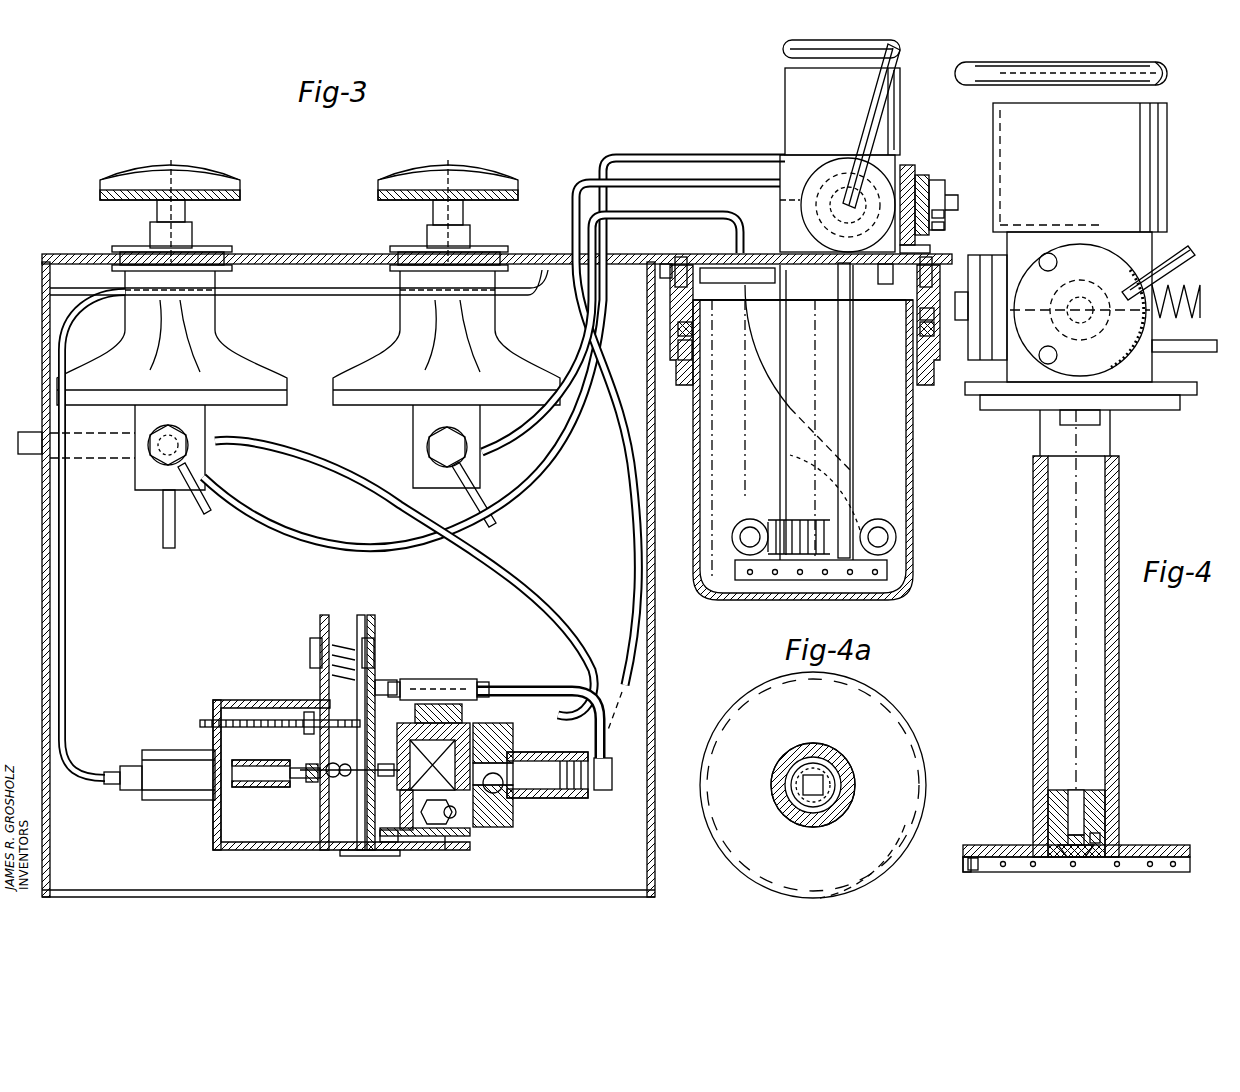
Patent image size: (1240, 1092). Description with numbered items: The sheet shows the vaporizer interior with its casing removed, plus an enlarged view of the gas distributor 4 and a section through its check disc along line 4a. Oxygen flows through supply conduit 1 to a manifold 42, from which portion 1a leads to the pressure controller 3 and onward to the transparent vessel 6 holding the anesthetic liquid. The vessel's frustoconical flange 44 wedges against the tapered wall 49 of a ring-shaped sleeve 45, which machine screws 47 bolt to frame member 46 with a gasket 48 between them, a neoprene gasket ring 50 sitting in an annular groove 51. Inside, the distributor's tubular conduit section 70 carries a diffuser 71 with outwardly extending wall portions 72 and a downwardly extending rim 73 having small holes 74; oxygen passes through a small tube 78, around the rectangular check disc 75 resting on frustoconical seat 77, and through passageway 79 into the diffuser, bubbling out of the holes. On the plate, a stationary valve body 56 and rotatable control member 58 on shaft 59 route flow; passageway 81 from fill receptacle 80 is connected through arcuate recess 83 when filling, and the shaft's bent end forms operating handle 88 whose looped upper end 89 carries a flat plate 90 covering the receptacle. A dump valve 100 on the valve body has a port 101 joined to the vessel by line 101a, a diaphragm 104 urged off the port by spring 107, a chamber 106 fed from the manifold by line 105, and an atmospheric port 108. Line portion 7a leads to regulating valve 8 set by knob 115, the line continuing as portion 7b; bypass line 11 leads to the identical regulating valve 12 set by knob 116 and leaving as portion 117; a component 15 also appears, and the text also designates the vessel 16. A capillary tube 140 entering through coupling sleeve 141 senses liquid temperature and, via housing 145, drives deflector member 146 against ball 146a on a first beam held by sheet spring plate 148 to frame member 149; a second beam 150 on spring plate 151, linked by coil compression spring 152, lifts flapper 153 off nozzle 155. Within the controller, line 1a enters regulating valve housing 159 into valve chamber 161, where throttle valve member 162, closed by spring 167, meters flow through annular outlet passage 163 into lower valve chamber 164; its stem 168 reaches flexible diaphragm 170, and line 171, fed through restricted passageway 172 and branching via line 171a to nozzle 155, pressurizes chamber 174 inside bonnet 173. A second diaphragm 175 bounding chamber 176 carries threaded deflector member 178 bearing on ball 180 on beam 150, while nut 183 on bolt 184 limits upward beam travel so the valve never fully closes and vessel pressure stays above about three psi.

In FIG. 3, the supply conduit 1 is at (28, 432).
In FIG. 3, the supply conduit portion 1a is at (284, 443).
In FIG. 3, the pressure controller 3 is at (548, 856).
In FIG. 3, the gas distributor 4 is at (856, 398).
In FIG. 4, the gas distributor 4 is at (1128, 667).
In FIG. 4, the section line 4a is at (956, 840).
In FIG. 3, the vessel 6 is at (913, 556).
In FIG. 3, the line portion 7a is at (692, 226).
In FIG. 3, the tube 7b is at (498, 527).
In FIG. 3, the regulating valve 8 is at (390, 326).
In FIG. 3, the bypass line 11 is at (420, 664).
In FIG. 3, the oxygen pressure regulating valve 12 is at (215, 310).
In FIG. 3, the pipe 15 is at (163, 535).
In FIG. 3, the vessel 16 is at (668, 186).
In FIG. 3, the manifold 42 is at (135, 470).
In FIG. 3, the frustoconically shaped flange 44 is at (920, 318).
In FIG. 3, the ring-shaped sleeve 45 is at (680, 308).
In FIG. 4, the ring-shaped sleeve 45 is at (968, 321).
In FIG. 3, the frame member 46 is at (290, 254).
In FIG. 4, the frame member 46 is at (968, 290).
In FIG. 3, the machine screws 47 is at (660, 268).
In FIG. 3, the gasket 48 is at (906, 282).
In FIG. 3, the tapered wall 49 is at (704, 290).
In FIG. 3, the gasket ring 50 is at (680, 330).
In FIG. 3, the annular groove 51 is at (684, 350).
In FIG. 3, the stationary valve body 56 is at (780, 173).
In FIG. 4, the stationary valve body 56 is at (1148, 370).
In FIG. 3, the rotatable control member 58 is at (803, 205).
In FIG. 4, the rotatable control member 58 is at (992, 360).
In FIG. 4, the shaft 59 is at (1205, 295).
In FIG. 3, the tubular conduit section 70 is at (850, 436).
In FIG. 4, the tubular conduit section 70 is at (1034, 470).
In FIG. 3, the diffuser 71 is at (882, 582).
In FIG. 4, the diffuser 71 is at (1168, 873).
In FIG. 4A, the diffuser 71 is at (862, 705).
In FIG. 4, the outwardly extending wall portions 72 is at (1015, 846).
In FIG. 4, the downwardly extending rim 73 is at (1195, 868).
In FIG. 4A, the downwardly extending rim 73 is at (895, 862).
In FIG. 4, the small holes 74 is at (1008, 872).
In FIG. 4, the check disc 75 is at (1072, 858).
In FIG. 4A, the check disc 75 is at (803, 785).
In FIG. 4, the frustoconical seat 77 is at (1095, 865).
In FIG. 4, the tube 78 is at (1105, 800).
In FIG. 4, the passageway 79 is at (1080, 870).
In FIG. 3, the fill receptacle 80 is at (790, 97).
In FIG. 4, the fill receptacle 80 is at (1180, 166).
In FIG. 4, the passageway 81 is at (1178, 246).
In FIG. 3, the arcuately shaped recess 83 is at (896, 135).
In FIG. 3, the operating handle 88 is at (901, 66).
In FIG. 3, the upper end of handle 89 is at (782, 50).
In FIG. 4, the upper end of handle 89 is at (1170, 78).
In FIG. 3, the flat plate 90 is at (862, 40).
In FIG. 4, the flat plate 90 is at (1097, 60).
In FIG. 3, the dump valve 100 is at (952, 206).
In FIG. 4, the dump valve 100 is at (1165, 340).
In FIG. 3, the valve port 101 is at (930, 228).
In FIG. 3, the line 101a is at (940, 214).
In FIG. 3, the diaphragm 104 is at (940, 190).
In FIG. 3, the line 105 is at (692, 152).
In FIG. 4, the line 105 is at (1192, 258).
In FIG. 3, the chamber 106 is at (934, 248).
In FIG. 3, the spring 107 is at (929, 180).
In FIG. 3, the small port 108 is at (908, 165).
In FIG. 3, the knob 115 is at (472, 160).
In FIG. 3, the knob 116 is at (190, 166).
In FIG. 3, the line portion 117 is at (200, 518).
In FIG. 3, the temperature sensitive element 140 is at (337, 294).
In FIG. 3, the headed coupling sleeve 141 is at (758, 296).
In FIG. 3, the housing 145 is at (176, 745).
In FIG. 3, the deflector member 146 is at (248, 787).
In FIG. 3, the ball 146a is at (312, 763).
In FIG. 3, the sheet spring mounting plate 148 is at (275, 852).
In FIG. 3, the frame member 149 is at (216, 850).
In FIG. 3, the second beam 150 is at (359, 615).
In FIG. 3, the spring mounting plate 151 is at (388, 842).
In FIG. 3, the coil compression spring 152 is at (327, 615).
In FIG. 3, the flapper 153 is at (373, 632).
In FIG. 3, the nozzle 155 is at (390, 680).
In FIG. 3, the regulating valve housing 159 is at (460, 835).
In FIG. 3, the valve chamber 161 is at (450, 737).
In FIG. 3, the throttle valve member 162 is at (448, 838).
In FIG. 3, the annular outlet passage 163 is at (502, 752).
In FIG. 3, the lower valve chamber 164 is at (505, 815).
In FIG. 3, the spring 167 is at (483, 740).
In FIG. 3, the elongated stem 168 is at (455, 822).
In FIG. 3, the flexible diaphragm 170 is at (502, 792).
In FIG. 3, the line 171 is at (548, 680).
In FIG. 3, the line 171a is at (415, 678).
In FIG. 3, the restricted passageway 172 is at (458, 680).
In FIG. 3, the bonnet 173 is at (605, 790).
In FIG. 3, the chamber 174 is at (548, 800).
In FIG. 3, the second diaphragm 175 is at (355, 795).
In FIG. 3, the chamber 176 is at (376, 856).
In FIG. 3, the deflector member 178 is at (362, 812).
In FIG. 3, the ball 180 is at (338, 777).
In FIG. 3, the nut 183 is at (309, 712).
In FIG. 3, the bolt 184 is at (262, 720).